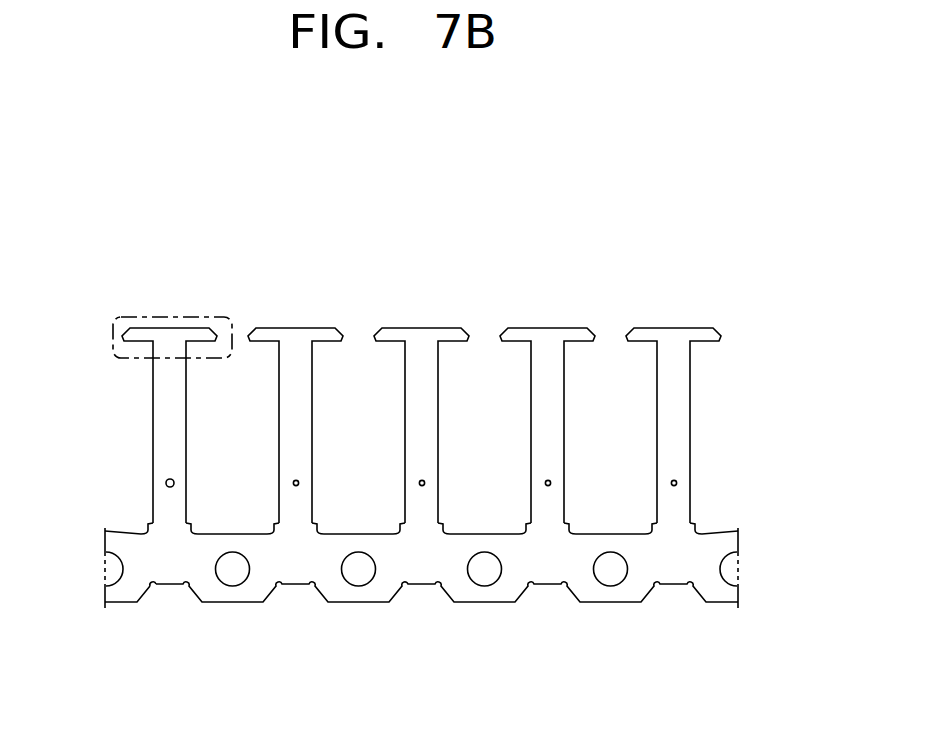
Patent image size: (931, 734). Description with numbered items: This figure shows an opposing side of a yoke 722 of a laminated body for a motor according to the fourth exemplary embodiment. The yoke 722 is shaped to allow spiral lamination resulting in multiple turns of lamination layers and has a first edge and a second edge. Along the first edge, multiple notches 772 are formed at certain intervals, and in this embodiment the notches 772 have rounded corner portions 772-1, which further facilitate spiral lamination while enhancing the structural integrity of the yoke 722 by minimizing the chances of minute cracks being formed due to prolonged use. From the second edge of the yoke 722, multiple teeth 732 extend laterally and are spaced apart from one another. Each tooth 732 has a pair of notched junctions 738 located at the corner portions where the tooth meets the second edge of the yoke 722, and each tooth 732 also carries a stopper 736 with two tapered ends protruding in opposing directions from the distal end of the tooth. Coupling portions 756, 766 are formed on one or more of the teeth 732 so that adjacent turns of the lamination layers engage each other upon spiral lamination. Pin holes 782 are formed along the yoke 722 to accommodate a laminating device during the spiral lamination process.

The yoke 722 is at (728, 297).
The teeth 732 is at (159, 405).
The stopper 736 is at (170, 317).
The notched junctions 738 is at (278, 527).
The coupling portion 756 is at (362, 486).
The coupling portion 766 is at (166, 484).
The notches 772 is at (298, 585).
The rounded corner portions 772-1 is at (155, 592).
The pin holes 782 is at (356, 576).